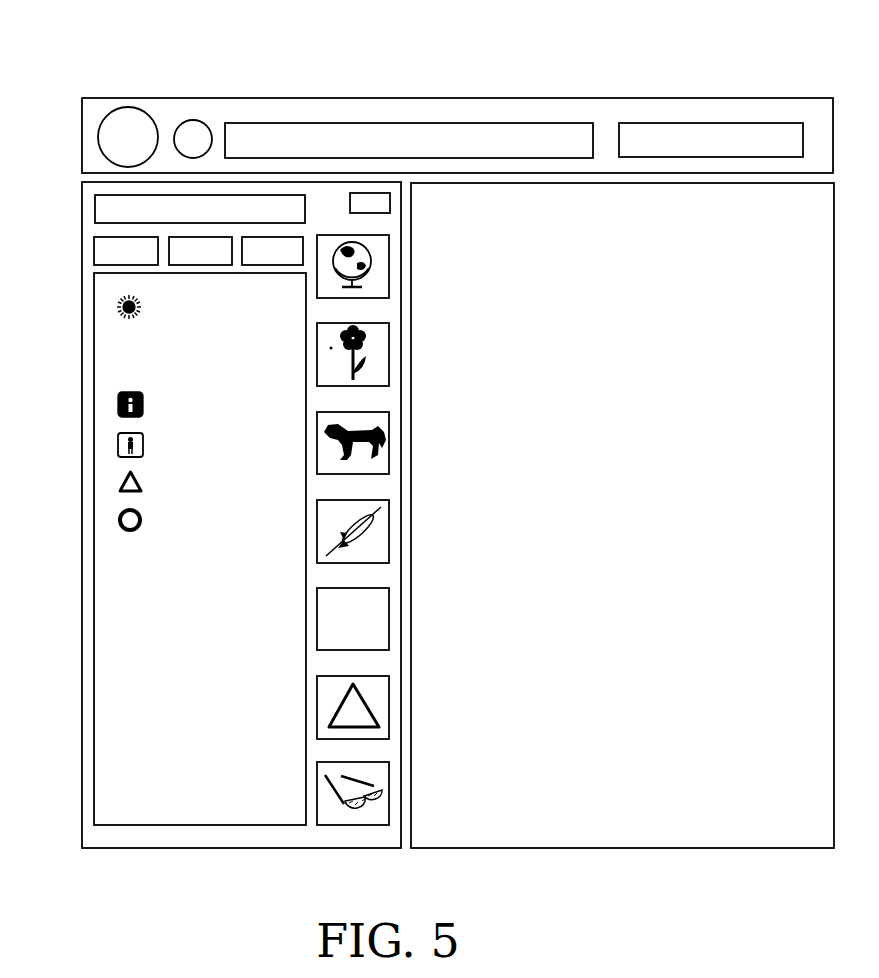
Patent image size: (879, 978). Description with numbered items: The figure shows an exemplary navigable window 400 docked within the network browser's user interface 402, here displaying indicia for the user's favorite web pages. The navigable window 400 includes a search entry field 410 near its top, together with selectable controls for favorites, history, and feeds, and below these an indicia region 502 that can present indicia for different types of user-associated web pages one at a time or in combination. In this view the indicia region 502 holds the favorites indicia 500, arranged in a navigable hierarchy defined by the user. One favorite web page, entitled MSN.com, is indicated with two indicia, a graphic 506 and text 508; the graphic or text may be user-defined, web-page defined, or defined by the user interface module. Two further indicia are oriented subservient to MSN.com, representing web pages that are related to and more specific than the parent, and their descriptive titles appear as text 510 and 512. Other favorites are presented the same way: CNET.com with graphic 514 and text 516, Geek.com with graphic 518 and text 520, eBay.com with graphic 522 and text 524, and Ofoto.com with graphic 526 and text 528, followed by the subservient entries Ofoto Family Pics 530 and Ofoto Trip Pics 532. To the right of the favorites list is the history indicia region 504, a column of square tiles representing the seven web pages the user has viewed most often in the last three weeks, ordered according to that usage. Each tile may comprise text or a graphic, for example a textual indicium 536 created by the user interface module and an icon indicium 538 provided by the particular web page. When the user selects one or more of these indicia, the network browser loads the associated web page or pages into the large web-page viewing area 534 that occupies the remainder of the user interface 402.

The user interface 402 is at (116, 52).
The navigable window 400 is at (285, 180).
The search entry field 410 is at (95, 209).
The history indicia region 504 is at (397, 225).
The graphic indicium 506 is at (117, 306).
The text indicium 508 is at (218, 295).
The subservient web page indicia text 510 is at (167, 343).
The subservient web page indicia text 512 is at (167, 362).
The CNET.com graphic indicium 514 is at (118, 403).
The CNET.com text indicium 516 is at (219, 393).
The Geek.com graphic indicium 518 is at (118, 445).
The Geek.com text indicium 520 is at (219, 431).
The eBay.com graphic indicium 522 is at (118, 483).
The eBay.com text indicium 524 is at (220, 470).
The Ofoto.com graphic indicium 526 is at (119, 520).
The Ofoto.com text indicium 528 is at (219, 509).
The Ofoto Family Pics indicium 530 is at (167, 557).
The Ofoto Trip Pics indicium 532 is at (167, 578).
The favorites indicia 500 is at (225, 623).
The indicia region 502 is at (261, 811).
The web-page viewing area 534 is at (789, 834).
The text indicium 536 is at (391, 601).
The icon indicium 538 is at (391, 688).